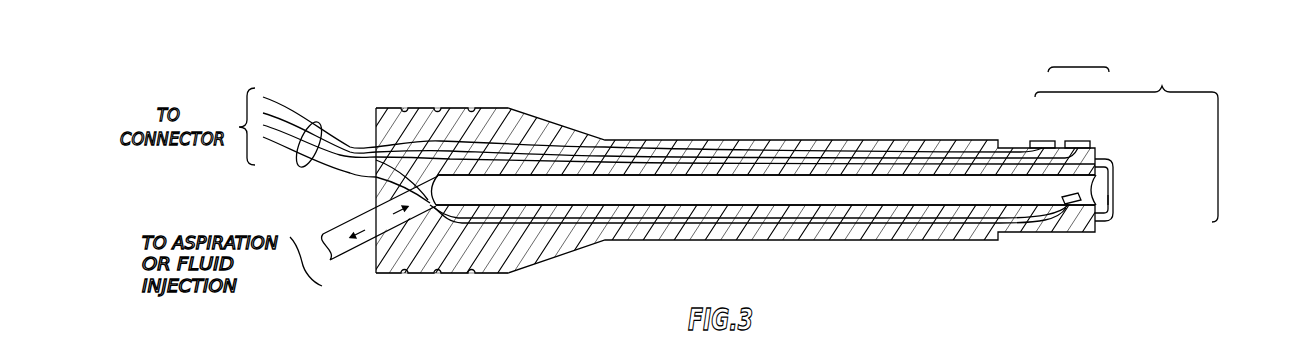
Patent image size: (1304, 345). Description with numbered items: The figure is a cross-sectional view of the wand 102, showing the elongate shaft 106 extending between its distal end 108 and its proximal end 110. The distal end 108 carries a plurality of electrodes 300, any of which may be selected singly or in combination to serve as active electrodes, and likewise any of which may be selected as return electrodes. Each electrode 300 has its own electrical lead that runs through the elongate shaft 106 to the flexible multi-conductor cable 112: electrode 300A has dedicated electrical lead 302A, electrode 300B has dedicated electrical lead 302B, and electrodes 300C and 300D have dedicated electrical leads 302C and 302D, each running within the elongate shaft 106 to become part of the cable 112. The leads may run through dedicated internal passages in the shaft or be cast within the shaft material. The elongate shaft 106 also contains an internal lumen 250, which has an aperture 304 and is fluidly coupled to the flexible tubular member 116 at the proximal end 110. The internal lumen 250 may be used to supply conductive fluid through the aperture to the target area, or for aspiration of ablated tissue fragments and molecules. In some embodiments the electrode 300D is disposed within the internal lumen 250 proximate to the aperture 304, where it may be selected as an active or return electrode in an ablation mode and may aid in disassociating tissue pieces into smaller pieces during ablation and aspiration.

The wand 102 is at (963, 65).
The elongate shaft 106 is at (760, 140).
The distal end 108 is at (1078, 65).
The proximal end 110 is at (498, 107).
The flexible multi-conductor cable 112 is at (312, 123).
The flexible tubular member 116 is at (350, 253).
The internal lumen 250 is at (745, 198).
The electrodes 300 is at (1163, 86).
The electrode 300A is at (1043, 140).
The electrode 300B is at (1080, 140).
The electrode 300C is at (1113, 175).
The electrode 300D is at (1108, 183).
The electrical lead 302A is at (818, 152).
The electrical lead 302B is at (903, 160).
The electrical lead 302C is at (1083, 220).
The electrical lead 302D is at (1027, 232).
The aperture 304 is at (1113, 200).